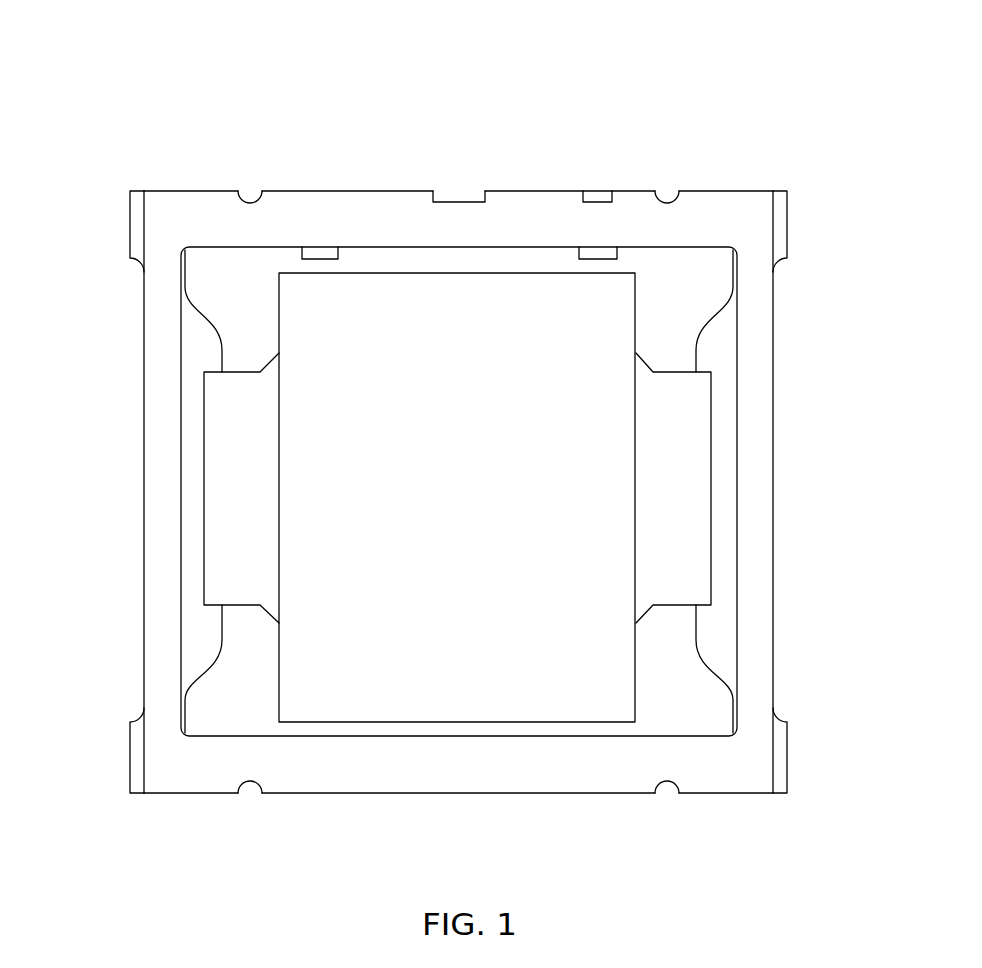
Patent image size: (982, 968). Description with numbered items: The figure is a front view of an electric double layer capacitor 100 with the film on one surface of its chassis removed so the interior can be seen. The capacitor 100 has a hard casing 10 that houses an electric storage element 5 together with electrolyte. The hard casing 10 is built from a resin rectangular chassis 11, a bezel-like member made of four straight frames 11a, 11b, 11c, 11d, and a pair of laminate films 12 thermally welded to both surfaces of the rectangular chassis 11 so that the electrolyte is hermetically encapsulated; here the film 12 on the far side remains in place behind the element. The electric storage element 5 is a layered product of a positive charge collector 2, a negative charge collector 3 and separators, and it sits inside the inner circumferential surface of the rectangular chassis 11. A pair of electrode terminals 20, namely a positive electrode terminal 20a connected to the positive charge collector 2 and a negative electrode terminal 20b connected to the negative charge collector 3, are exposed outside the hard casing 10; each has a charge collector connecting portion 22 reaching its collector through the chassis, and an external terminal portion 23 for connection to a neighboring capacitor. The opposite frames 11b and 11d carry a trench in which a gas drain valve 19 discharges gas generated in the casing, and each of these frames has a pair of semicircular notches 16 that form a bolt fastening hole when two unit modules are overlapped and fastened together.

The capacitor 100 is at (457, 435).
The hard casing 10 is at (496, 188).
The rectangular chassis 11 is at (460, 479).
The frame 11a is at (160, 484).
The frame 11b is at (545, 220).
The frame 11c is at (757, 487).
The frame 11d is at (447, 768).
The film 12 is at (459, 435).
The semicircular notch 16 is at (252, 200).
The gas drain valve 19 is at (325, 257).
The electric storage element 5 is at (375, 268).
The positive charge collector 2 is at (232, 420).
The negative charge collector 3 is at (678, 421).
The electrode terminal 20 is at (457, 311).
The positive electrode terminal 20a is at (198, 347).
The negative electrode terminal 20b is at (715, 347).
The charge collector connecting portion 22 is at (200, 630).
The external terminal portion 23 is at (137, 219).